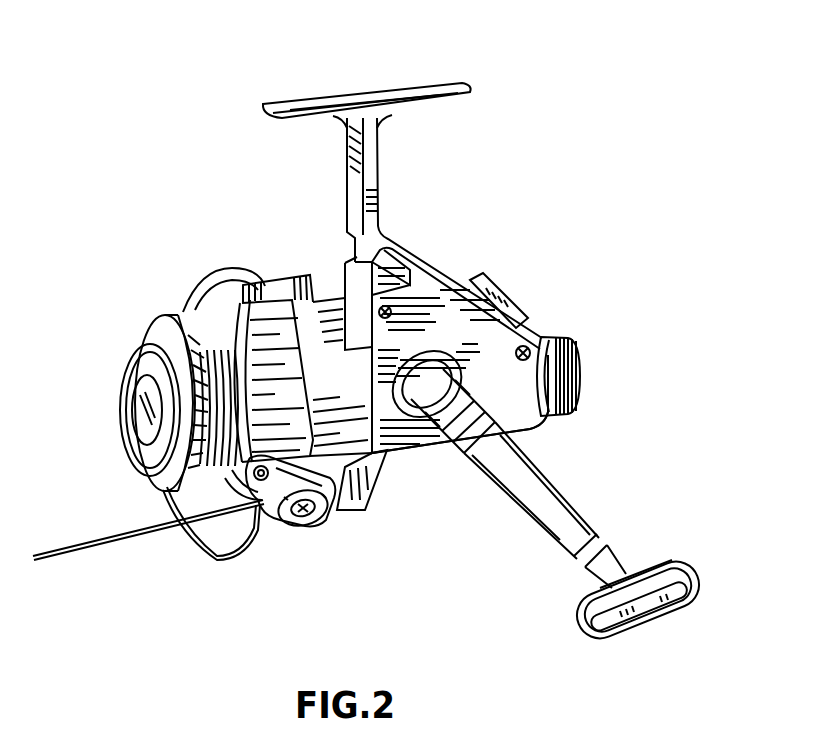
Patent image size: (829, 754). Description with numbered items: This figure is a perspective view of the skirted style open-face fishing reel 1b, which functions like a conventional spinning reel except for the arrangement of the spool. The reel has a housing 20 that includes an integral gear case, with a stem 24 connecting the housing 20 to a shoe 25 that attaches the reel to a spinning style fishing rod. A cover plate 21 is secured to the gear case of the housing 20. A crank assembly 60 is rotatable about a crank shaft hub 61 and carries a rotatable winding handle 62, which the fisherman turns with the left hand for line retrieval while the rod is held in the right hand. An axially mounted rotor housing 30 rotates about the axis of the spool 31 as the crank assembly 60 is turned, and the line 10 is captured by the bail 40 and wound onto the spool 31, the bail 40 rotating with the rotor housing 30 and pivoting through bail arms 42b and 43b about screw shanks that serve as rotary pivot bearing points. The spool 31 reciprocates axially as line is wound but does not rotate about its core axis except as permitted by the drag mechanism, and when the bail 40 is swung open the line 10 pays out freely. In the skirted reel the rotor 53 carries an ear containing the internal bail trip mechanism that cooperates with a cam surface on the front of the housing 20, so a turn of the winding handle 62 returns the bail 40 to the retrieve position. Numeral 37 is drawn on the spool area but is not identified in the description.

The skirted style open-face fishing reel 1b is at (538, 250).
The shoe 25 is at (415, 88).
The stem 24 is at (380, 152).
The housing 20 is at (437, 269).
The cover plate 21 is at (537, 425).
The rotor housing 30 is at (322, 275).
The rotor 53 is at (341, 377).
The bail arm 42b is at (227, 277).
The spool 31 is at (160, 328).
The spool hub 37 is at (130, 467).
The crank shaft hub 61 is at (435, 405).
The crank assembly 60 is at (532, 518).
The winding handle 62 is at (700, 588).
The line 10 is at (80, 553).
The bail 40 is at (213, 562).
The bail arm 43b is at (305, 527).